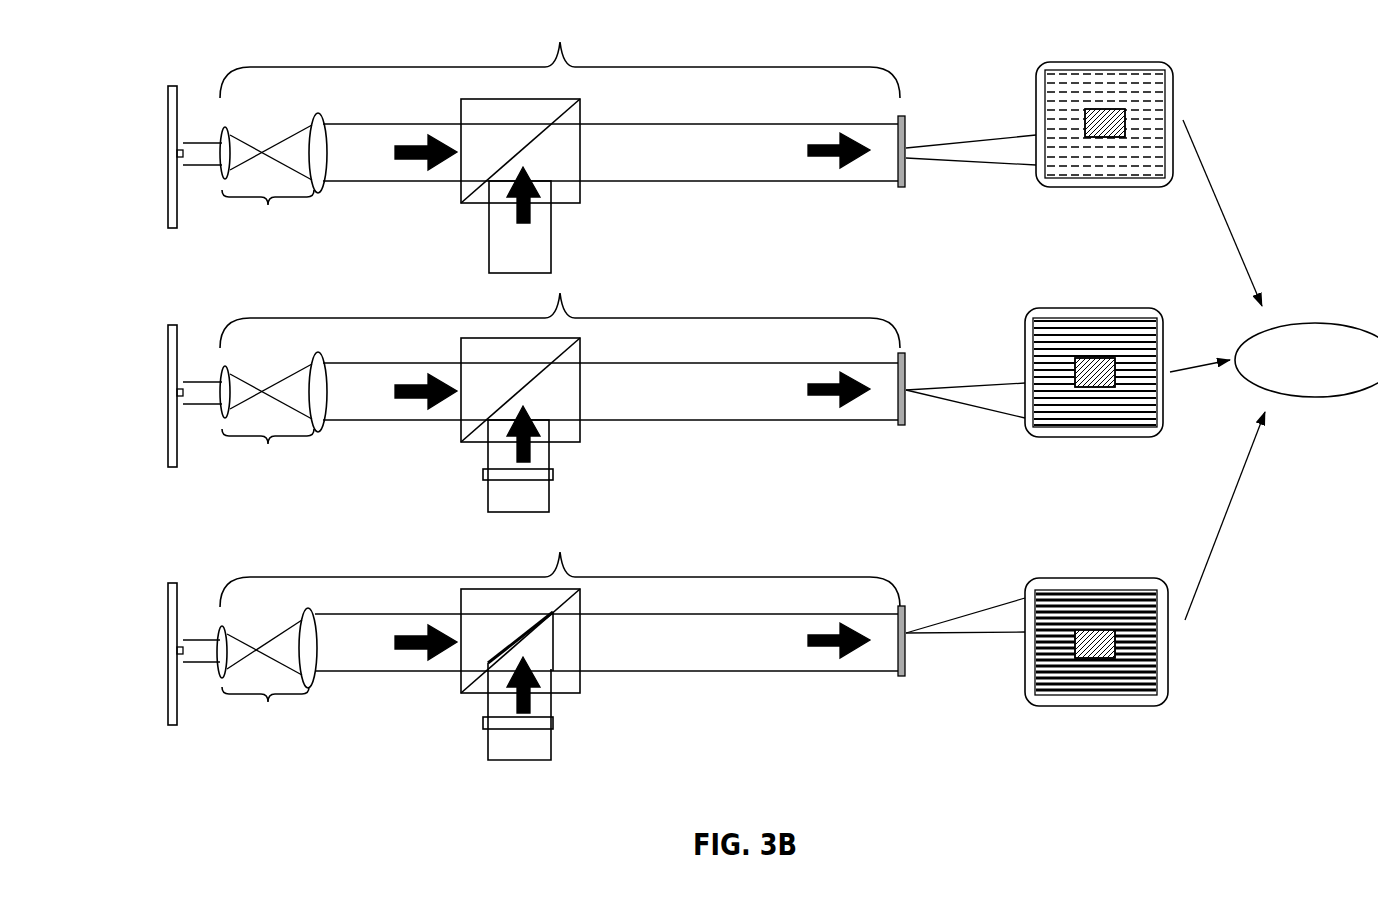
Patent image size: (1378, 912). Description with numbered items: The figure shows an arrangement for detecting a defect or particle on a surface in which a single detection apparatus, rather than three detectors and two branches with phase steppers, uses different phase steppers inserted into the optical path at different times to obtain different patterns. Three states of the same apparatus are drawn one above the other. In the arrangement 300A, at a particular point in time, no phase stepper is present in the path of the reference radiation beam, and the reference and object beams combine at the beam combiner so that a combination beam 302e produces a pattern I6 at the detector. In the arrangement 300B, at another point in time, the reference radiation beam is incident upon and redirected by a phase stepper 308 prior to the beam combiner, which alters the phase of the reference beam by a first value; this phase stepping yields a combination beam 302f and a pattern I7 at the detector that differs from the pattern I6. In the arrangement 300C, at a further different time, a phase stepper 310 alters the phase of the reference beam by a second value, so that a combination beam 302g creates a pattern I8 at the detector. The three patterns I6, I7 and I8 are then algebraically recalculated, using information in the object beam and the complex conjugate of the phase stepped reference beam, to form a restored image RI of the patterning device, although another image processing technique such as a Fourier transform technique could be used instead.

The arrangement 300A is at (150, 182).
The arrangement 300B is at (130, 396).
The arrangement 300C is at (132, 654).
The combination beam 302e is at (647, 147).
The combination beam 302f is at (610, 379).
The combination beam 302g is at (606, 630).
The phase stepper 308 is at (495, 495).
The phase stepper 310 is at (495, 744).
The pattern I6 is at (1073, 183).
The pattern I7 is at (1034, 391).
The pattern I8 is at (1037, 665).
The restored image RI is at (1274, 370).